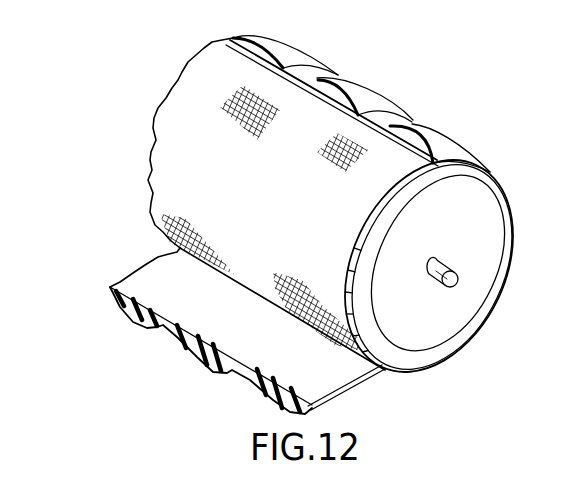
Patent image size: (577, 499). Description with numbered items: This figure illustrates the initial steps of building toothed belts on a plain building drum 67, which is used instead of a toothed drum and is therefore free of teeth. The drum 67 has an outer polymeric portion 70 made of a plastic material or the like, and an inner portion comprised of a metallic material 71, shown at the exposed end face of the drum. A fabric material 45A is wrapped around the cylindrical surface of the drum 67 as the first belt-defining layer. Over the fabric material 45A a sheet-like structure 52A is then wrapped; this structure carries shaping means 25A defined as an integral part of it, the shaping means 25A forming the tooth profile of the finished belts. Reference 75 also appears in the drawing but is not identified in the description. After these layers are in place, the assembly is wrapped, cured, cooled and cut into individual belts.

The shaping means 25A is at (262, 41).
The fabric material 45A is at (168, 137).
The sheet-like structure 52A is at (158, 255).
The outer polymeric portion 70 is at (494, 176).
The metallic material 71 is at (486, 233).
The plain building drum 67 is at (433, 333).
The shaft 75 is at (563, 280).